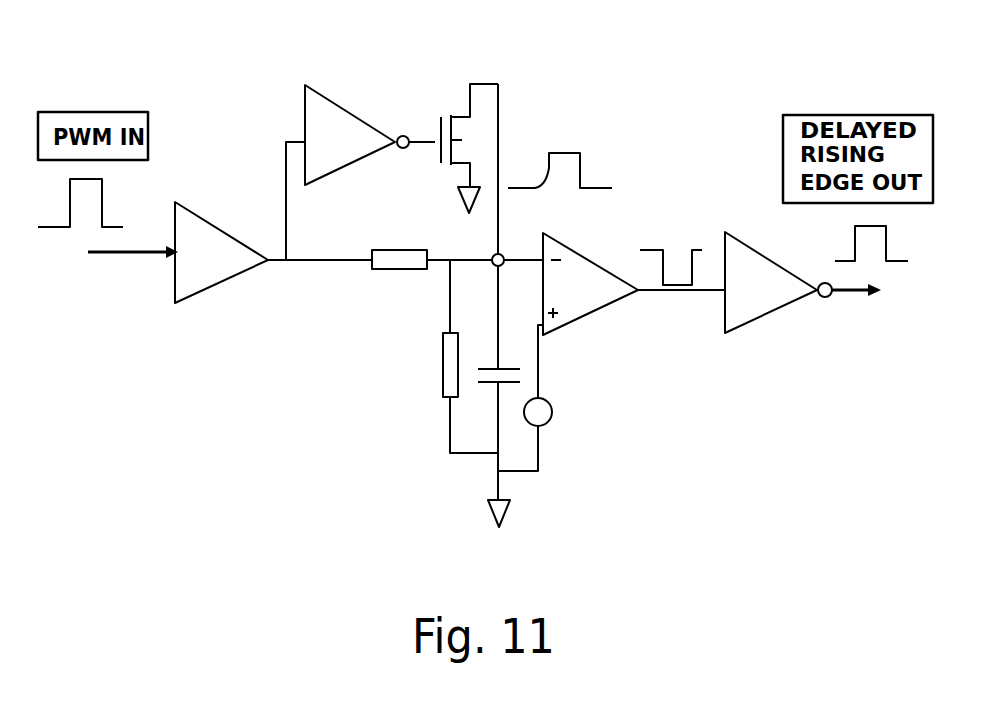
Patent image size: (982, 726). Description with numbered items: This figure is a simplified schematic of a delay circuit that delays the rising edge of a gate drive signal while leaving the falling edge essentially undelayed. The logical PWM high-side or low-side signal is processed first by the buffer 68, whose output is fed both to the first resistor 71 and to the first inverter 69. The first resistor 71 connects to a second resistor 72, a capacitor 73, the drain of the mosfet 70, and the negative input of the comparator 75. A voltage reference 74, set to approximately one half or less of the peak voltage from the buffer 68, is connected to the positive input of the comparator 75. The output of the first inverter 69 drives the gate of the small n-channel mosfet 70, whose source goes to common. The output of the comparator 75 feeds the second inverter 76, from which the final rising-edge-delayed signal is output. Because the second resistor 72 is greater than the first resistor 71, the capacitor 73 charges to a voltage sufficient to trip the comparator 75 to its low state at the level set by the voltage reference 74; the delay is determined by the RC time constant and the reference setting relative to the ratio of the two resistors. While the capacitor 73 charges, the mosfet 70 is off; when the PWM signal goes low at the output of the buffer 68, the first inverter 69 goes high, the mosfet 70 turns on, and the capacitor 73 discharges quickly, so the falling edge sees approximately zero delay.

The buffer U1 68 is at (217, 228).
The inverter U2 69 is at (358, 118).
The mosfet Q1 70 is at (458, 140).
The resistor R1 71 is at (393, 269).
The resistor R2 72 is at (443, 375).
The capacitor C 73 is at (492, 387).
The reference VR 74 is at (545, 426).
The comparator U3 75 is at (592, 313).
The inverter U4 76 is at (747, 323).